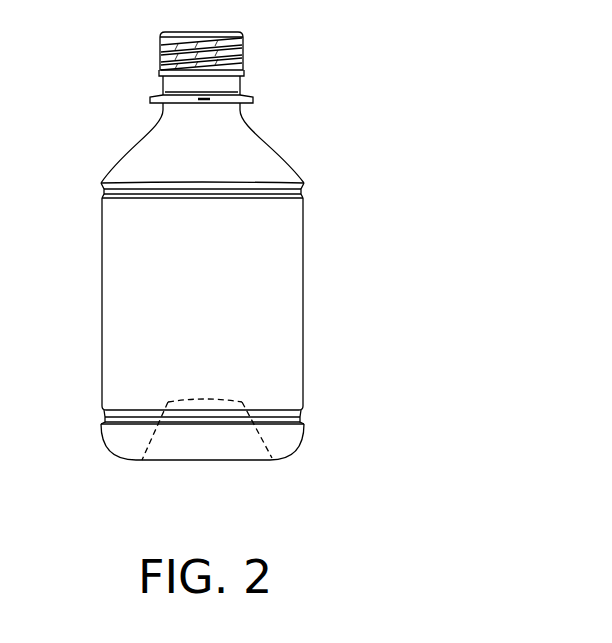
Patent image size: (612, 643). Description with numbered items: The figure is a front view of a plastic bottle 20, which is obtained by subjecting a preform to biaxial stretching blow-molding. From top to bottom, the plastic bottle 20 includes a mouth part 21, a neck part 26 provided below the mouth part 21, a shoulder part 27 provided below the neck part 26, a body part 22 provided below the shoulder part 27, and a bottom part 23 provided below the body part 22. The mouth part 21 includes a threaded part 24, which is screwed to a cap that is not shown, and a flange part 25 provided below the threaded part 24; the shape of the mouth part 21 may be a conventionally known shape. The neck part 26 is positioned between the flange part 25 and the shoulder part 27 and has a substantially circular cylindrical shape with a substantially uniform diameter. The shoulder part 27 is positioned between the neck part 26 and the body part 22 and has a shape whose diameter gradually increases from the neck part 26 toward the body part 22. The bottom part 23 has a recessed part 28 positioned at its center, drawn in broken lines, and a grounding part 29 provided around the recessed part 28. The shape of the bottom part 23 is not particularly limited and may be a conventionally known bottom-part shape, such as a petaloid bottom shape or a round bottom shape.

The plastic bottle 20 is at (340, 76).
The mouth part 21 is at (244, 67).
The body part 22 is at (293, 302).
The bottom part 23 is at (215, 460).
The threaded part 24 is at (160, 39).
The flange part 25 is at (150, 98).
The neck part 26 is at (162, 112).
The shoulder part 27 is at (270, 140).
The recessed part 28 is at (153, 445).
The grounding part 29 is at (275, 458).